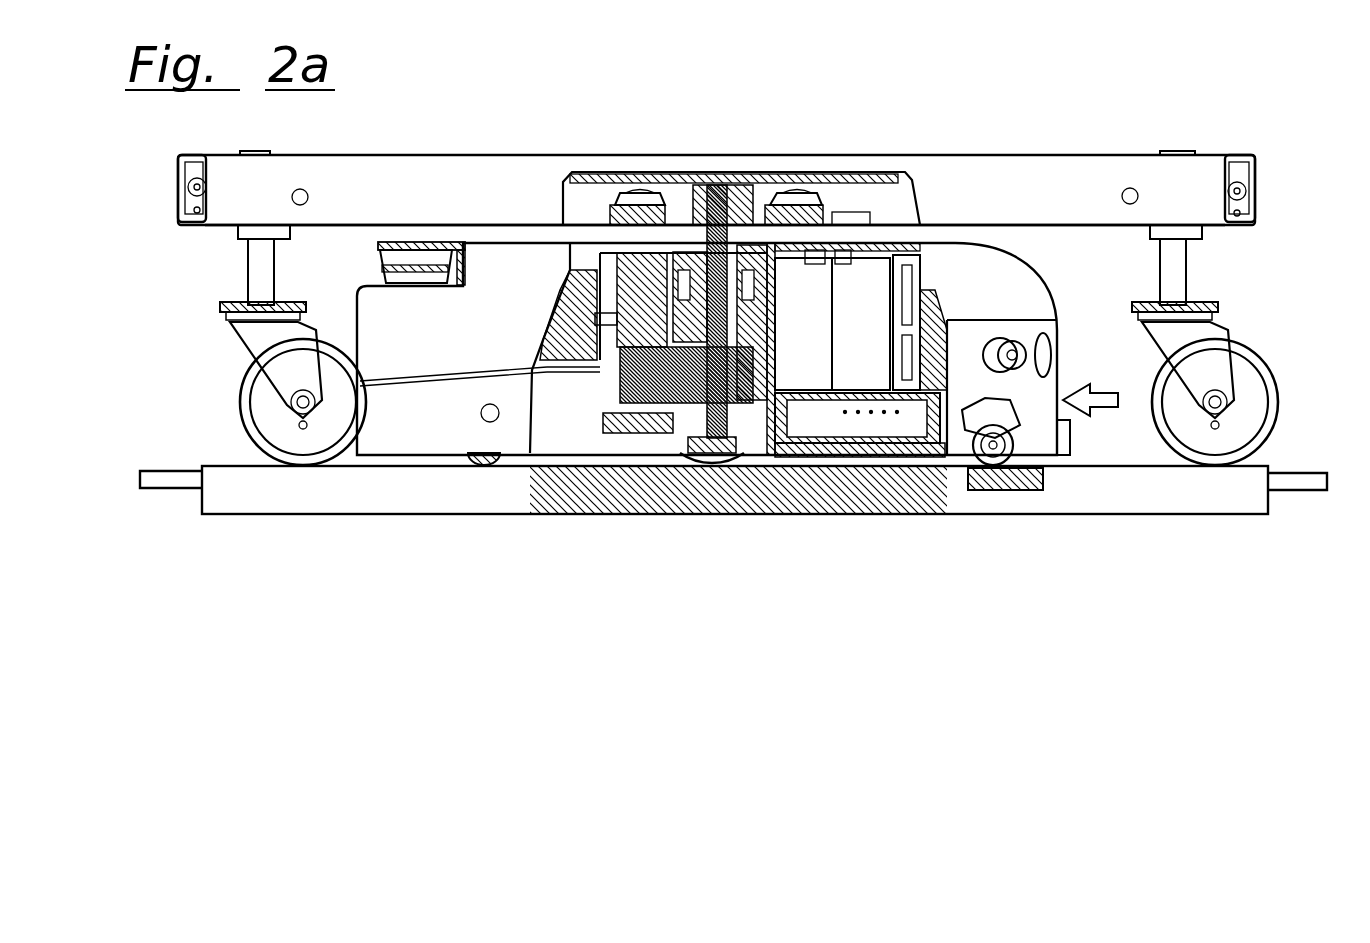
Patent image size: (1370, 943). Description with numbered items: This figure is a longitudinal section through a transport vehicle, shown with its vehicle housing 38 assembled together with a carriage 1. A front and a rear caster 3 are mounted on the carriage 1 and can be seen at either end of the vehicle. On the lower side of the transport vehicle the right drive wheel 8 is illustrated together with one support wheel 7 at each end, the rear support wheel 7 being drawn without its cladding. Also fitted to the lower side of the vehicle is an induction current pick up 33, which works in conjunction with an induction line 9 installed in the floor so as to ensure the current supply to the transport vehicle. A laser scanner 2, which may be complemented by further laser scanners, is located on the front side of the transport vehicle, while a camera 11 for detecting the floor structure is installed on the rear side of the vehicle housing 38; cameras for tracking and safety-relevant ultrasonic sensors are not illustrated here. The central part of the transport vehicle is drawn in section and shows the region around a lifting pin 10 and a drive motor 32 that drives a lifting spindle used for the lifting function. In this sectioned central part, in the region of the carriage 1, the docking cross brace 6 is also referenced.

The carriage 1 is at (520, 156).
The laser scanner 2 is at (410, 265).
The caster 3 is at (242, 395).
The docking cross brace 6 is at (657, 215).
The support wheel 7 is at (985, 458).
The drive wheel 8 is at (711, 462).
The induction line 9 is at (1288, 492).
The lifting pin 10 is at (700, 215).
The camera 11 is at (1060, 422).
The drive motor 32 is at (638, 320).
The induction current pick up 33 is at (836, 452).
The vehicle housing 38 is at (1011, 246).